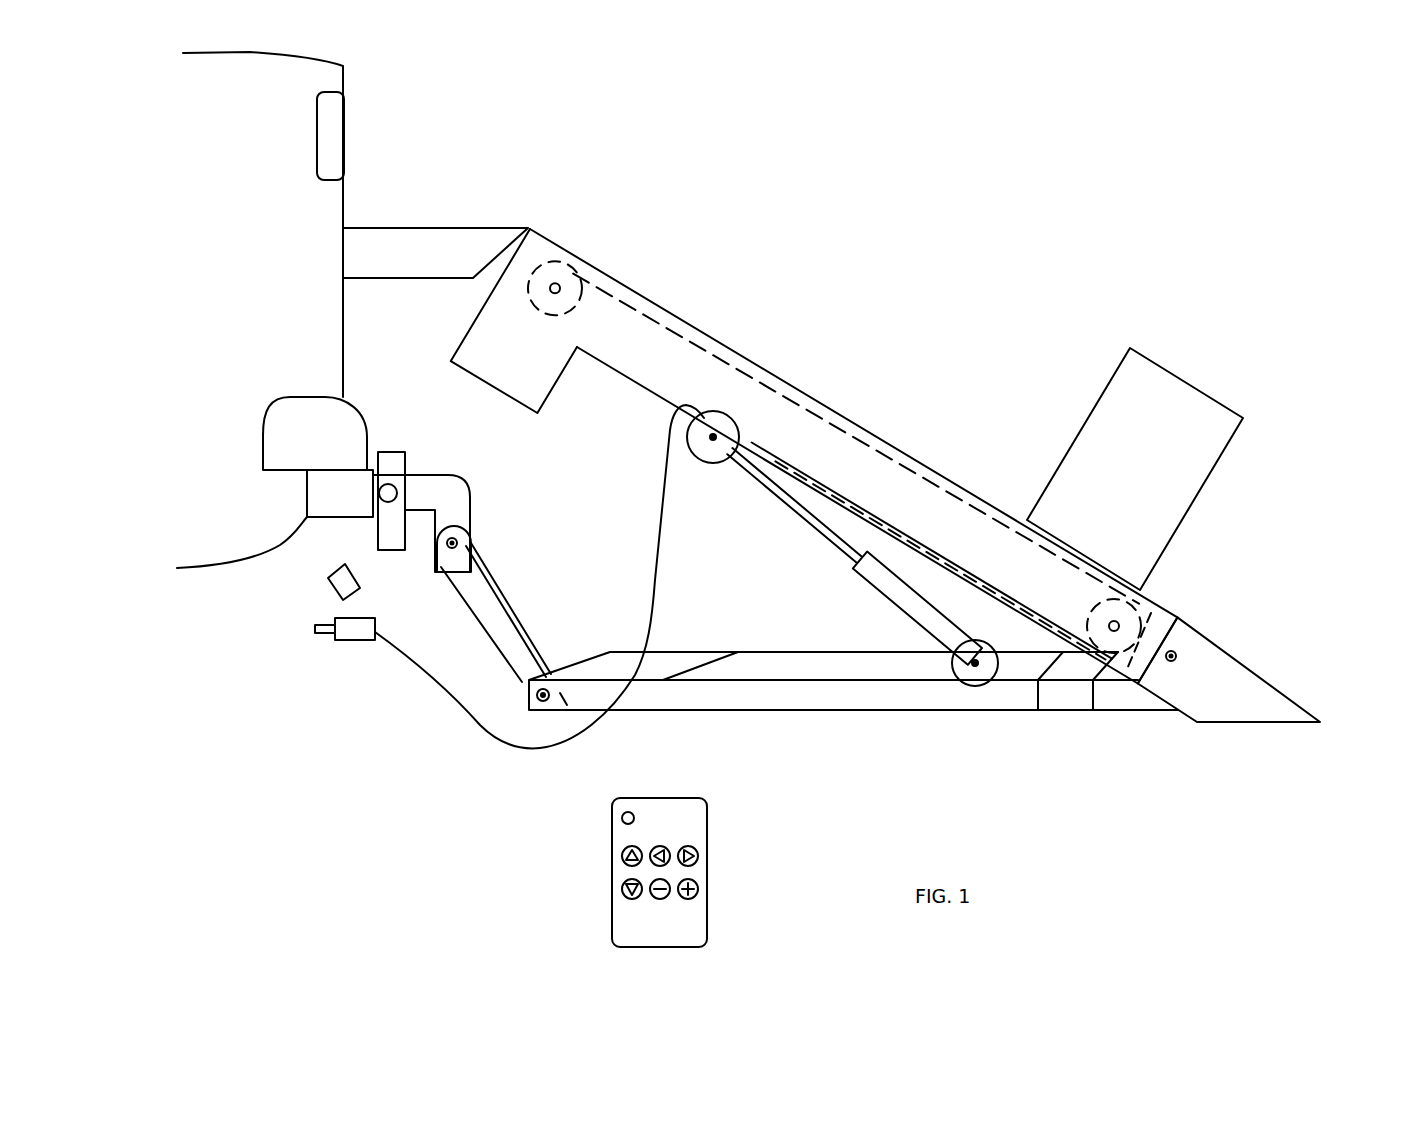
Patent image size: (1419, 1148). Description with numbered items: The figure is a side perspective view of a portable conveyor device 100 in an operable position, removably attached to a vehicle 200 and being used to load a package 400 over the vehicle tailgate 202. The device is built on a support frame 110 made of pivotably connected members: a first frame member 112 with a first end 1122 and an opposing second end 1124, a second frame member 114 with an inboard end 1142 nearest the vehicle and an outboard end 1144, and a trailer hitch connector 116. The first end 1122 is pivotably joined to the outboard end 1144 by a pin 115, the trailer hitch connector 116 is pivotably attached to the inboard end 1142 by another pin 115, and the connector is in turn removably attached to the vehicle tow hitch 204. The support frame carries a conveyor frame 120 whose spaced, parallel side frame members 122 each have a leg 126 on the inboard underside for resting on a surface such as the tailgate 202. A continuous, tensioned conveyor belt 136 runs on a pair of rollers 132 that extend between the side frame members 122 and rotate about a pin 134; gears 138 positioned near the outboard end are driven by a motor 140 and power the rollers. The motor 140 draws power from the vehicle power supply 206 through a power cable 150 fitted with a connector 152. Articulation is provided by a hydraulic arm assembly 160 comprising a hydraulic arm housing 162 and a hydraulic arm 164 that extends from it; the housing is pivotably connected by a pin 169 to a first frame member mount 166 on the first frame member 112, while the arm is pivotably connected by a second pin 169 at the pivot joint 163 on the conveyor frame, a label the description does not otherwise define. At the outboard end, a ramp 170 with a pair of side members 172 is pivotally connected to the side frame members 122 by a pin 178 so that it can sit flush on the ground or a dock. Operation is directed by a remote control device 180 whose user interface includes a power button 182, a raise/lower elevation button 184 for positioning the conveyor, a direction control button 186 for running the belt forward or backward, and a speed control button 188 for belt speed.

The portable conveyor device 100 is at (868, 312).
The support frame 110 is at (945, 694).
The first frame member 112 is at (861, 684).
The first end 1122 is at (580, 662).
The second end 1124 is at (1152, 715).
The second frame member 114 is at (491, 648).
The inboard end 1142 is at (474, 537).
The outboard end 1144 is at (523, 697).
The pin 115 is at (447, 545).
The trailer hitch connector 116 is at (452, 470).
The conveyor frame 120 is at (857, 473).
The side frame member 122 is at (915, 448).
The leg 126 is at (545, 397).
The roller 132 is at (585, 262).
The pin 134 is at (553, 288).
The conveyor belt 136 is at (683, 333).
The gear 138 is at (1158, 613).
The motor 140 is at (1080, 714).
The power cable 150 is at (663, 548).
The connector 152 is at (345, 641).
The hydraulic arm assembly 160 is at (819, 592).
The hydraulic arm housing 162 is at (927, 608).
The pivot joint 163 is at (708, 447).
The hydraulic arm 164 is at (797, 512).
The first frame member mount 166 is at (965, 680).
The pin 169 is at (710, 436).
The ramp 170 is at (1249, 710).
The side member 172 is at (1240, 697).
The pin 178 is at (1175, 662).
The remote control device 180 is at (675, 854).
The power button 182 is at (628, 812).
The raise/lower elevation button 184 is at (630, 855).
The direction control button 186 is at (690, 855).
The speed control button 188 is at (688, 888).
The vehicle 200 is at (345, 127).
The vehicle tailgate 202 is at (420, 228).
The vehicle tow hitch 204 is at (368, 453).
The vehicle power supply 206 is at (334, 566).
The package 400 is at (1183, 373).